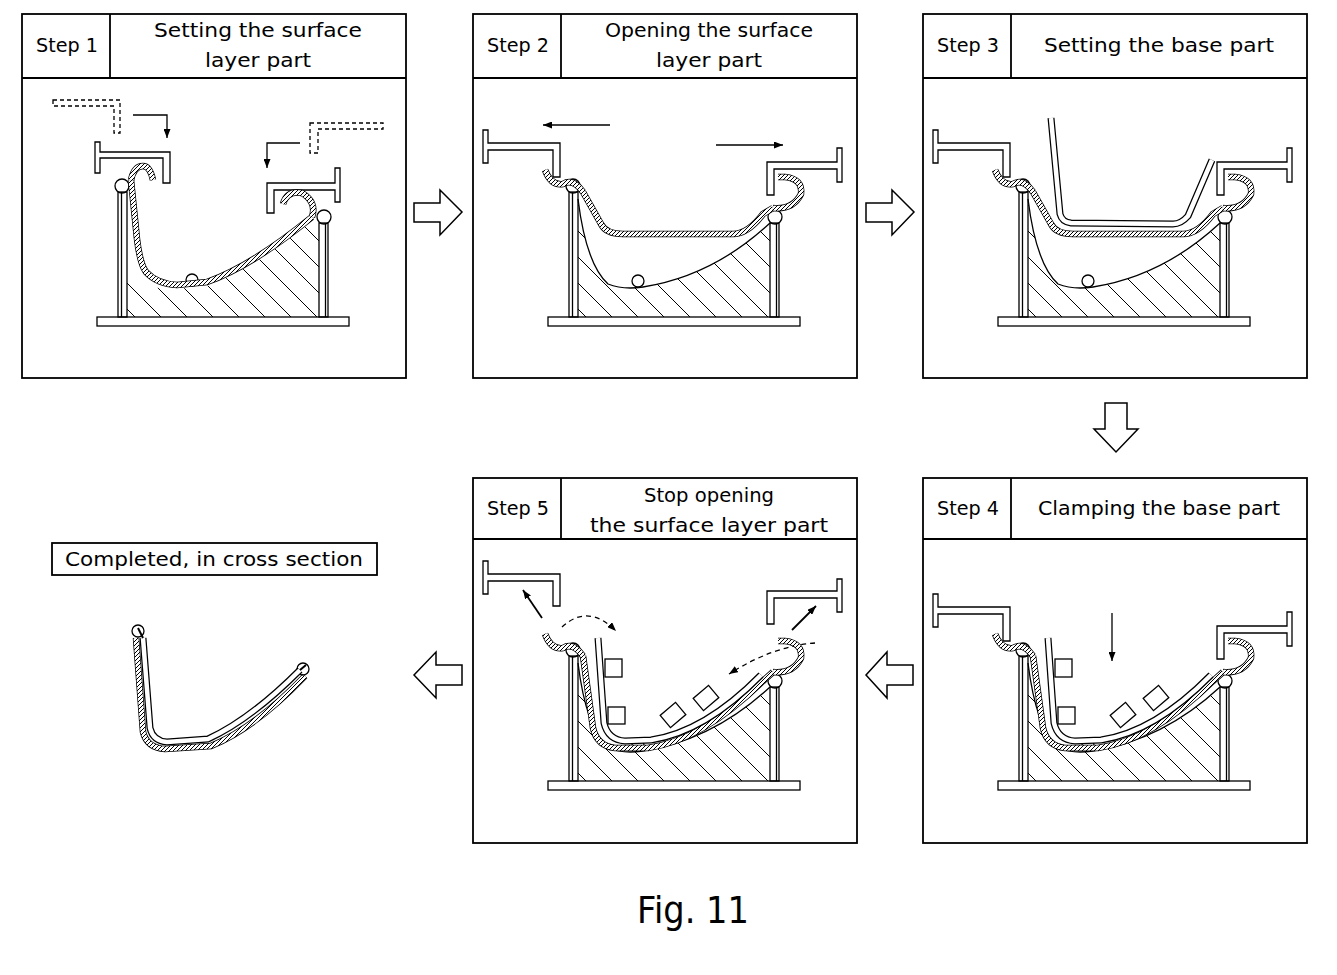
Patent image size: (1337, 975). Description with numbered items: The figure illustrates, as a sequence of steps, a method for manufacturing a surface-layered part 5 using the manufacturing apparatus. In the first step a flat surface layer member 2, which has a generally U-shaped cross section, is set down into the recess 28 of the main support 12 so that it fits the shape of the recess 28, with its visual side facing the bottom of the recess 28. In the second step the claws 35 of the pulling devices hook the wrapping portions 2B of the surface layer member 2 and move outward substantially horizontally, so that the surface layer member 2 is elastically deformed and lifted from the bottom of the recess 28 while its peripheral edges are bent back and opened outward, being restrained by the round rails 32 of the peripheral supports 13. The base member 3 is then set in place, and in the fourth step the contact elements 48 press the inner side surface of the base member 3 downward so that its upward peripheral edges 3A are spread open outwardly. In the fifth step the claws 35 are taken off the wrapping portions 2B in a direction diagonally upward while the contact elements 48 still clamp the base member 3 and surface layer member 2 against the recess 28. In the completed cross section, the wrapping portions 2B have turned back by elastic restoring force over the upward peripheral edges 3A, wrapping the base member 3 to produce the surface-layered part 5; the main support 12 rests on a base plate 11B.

The surface layer member 2 is at (130, 246).
The wrapping portions 2B is at (96, 191).
The base member 3 is at (136, 138).
The upward peripheral edges 3A is at (132, 637).
The surface-layered part 5 is at (271, 758).
The base plate of molding die 11B is at (326, 308).
The main support 12 is at (251, 283).
The peripheral supports 13 is at (352, 262).
The recess 28 is at (171, 272).
The round rails 32 is at (345, 226).
The claws 35 is at (335, 116).
The contact elements 48 is at (887, 668).